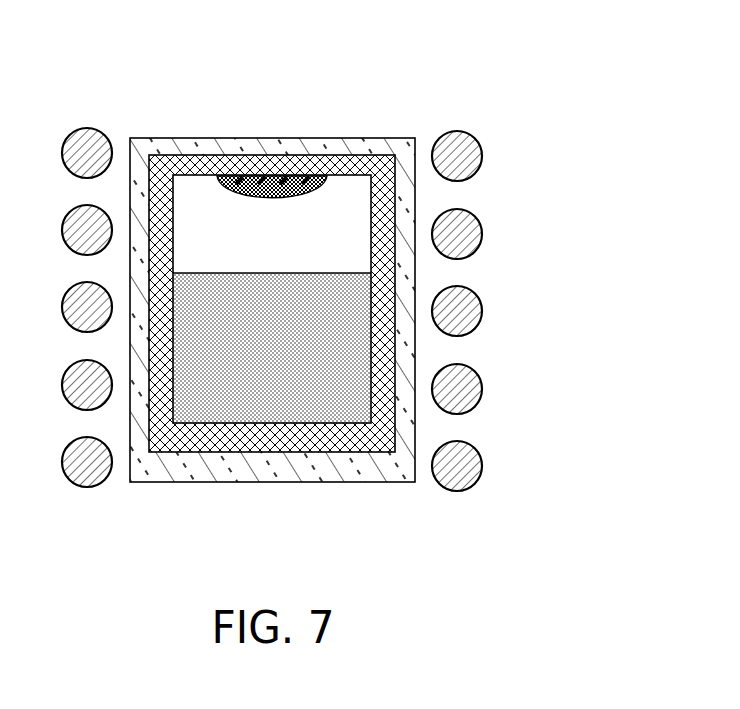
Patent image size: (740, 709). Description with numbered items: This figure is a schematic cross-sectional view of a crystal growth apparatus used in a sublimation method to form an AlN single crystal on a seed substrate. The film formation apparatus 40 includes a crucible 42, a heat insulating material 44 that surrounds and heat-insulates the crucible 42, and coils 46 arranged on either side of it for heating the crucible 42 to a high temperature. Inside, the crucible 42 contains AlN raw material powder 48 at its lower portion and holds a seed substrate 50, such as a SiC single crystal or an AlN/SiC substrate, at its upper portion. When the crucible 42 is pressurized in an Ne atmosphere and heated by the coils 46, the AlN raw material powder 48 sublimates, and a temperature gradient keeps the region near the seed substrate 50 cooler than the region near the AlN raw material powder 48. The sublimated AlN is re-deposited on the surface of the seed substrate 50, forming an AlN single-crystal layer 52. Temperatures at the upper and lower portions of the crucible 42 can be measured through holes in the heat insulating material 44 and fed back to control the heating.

The film formation apparatus 40 is at (122, 88).
The crucible 42 is at (335, 437).
The heat insulating material 44 is at (197, 468).
The coils 46 is at (484, 156).
The AlN raw material powder 48 is at (333, 272).
The seed substrate 50 is at (347, 172).
The AlN single-crystal layer 52 is at (226, 194).